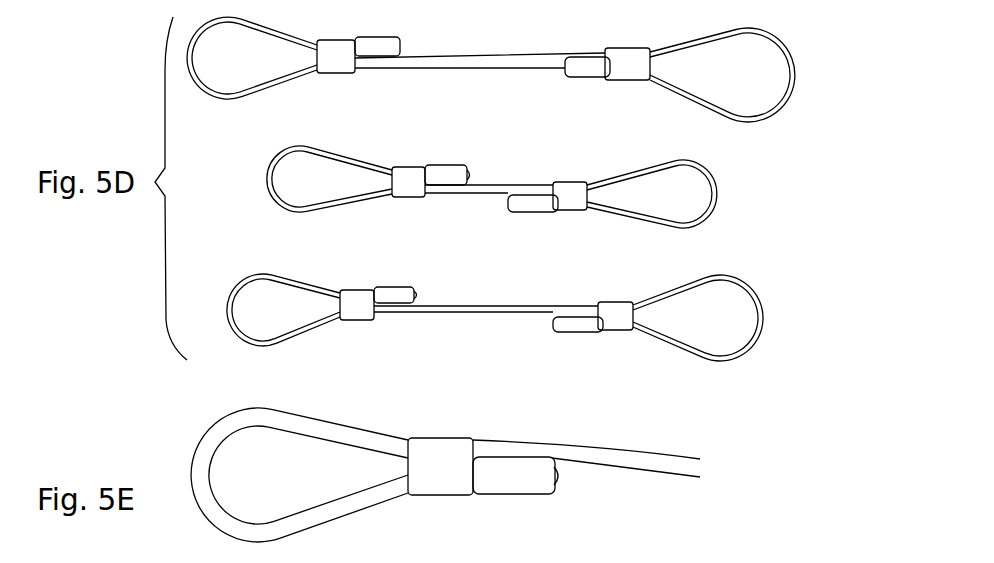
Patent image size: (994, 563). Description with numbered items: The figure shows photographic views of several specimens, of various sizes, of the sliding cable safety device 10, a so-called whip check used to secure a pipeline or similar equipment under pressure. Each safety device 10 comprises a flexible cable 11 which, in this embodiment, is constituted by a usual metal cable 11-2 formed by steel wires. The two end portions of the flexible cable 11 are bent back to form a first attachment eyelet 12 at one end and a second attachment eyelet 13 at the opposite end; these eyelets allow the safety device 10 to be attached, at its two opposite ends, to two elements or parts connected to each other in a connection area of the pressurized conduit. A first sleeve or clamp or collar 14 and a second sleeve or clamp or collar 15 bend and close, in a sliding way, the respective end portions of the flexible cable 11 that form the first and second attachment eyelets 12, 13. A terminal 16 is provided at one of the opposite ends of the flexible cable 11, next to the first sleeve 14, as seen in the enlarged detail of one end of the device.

In FIG. 5D, the safety device 10 is at (797, 26).
In FIG. 5E, the safety device 10 is at (709, 426).
In FIG. 5D, the flexible cable 11 is at (462, 308).
In FIG. 5E, the flexible cable 11 is at (594, 437).
In FIG. 5D, the metal cable 11-2 is at (470, 55).
In FIG. 5E, the metal cable 11-2 is at (638, 465).
In FIG. 5D, the first attachment eyelet 12 is at (247, 283).
In FIG. 5E, the first attachment eyelet 12 is at (210, 433).
In FIG. 5D, the second attachment eyelet 13 is at (708, 180).
In FIG. 5E, the first sleeve 14 is at (441, 483).
In FIG. 5D, the second sleeve 15 is at (573, 190).
In FIG. 5E, the terminal 16 is at (523, 485).